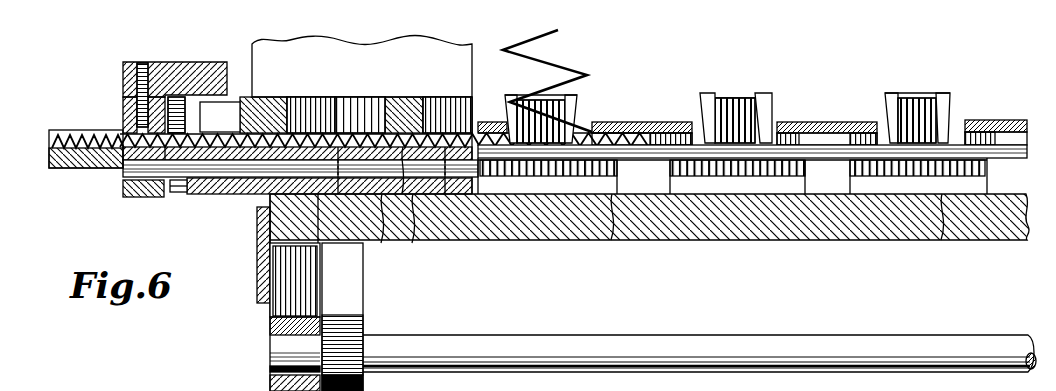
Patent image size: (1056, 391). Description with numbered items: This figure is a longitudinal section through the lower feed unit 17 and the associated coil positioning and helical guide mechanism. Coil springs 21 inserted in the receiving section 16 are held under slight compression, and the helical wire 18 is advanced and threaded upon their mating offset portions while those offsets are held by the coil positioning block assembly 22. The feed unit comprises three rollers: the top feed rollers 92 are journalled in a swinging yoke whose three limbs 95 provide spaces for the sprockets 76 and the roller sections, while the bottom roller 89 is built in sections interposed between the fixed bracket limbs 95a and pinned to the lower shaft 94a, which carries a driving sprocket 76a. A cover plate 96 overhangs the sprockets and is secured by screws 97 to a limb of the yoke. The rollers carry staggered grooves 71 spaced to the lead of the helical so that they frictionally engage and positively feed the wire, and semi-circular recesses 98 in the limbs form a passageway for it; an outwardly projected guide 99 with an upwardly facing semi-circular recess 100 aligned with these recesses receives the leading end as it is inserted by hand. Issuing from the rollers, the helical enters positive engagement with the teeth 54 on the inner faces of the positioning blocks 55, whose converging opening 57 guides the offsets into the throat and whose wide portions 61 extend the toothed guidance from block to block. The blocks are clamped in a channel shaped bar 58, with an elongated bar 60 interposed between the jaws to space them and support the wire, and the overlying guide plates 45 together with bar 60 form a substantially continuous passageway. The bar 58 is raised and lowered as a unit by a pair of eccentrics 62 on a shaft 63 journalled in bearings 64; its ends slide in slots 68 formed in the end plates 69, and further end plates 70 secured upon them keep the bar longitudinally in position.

The receiving section 16 is at (661, 386).
The lower feed unit 17 is at (306, 95).
The helical wire 18 is at (76, 131).
The coil springs 21 is at (548, 33).
The coil positioning block assembly 22 is at (731, 92).
The guide plates 45 is at (492, 121).
The teeth 54 is at (710, 100).
The positioning blocks 55 is at (767, 94).
The converging opening 57 is at (575, 95).
The channel shaped bar 58 is at (725, 222).
The elongated bar 60 is at (828, 160).
The wide portions 61 is at (590, 242).
The eccentrics 62 is at (363, 311).
The shaft 63 is at (660, 337).
The bearings 64 is at (270, 334).
The slots 68 is at (305, 278).
The end plates 69 is at (270, 311).
The end plates 70 is at (266, 244).
The staggered grooves 71 is at (376, 97).
The sprockets 76 is at (187, 117).
The driving sprocket 76a is at (178, 194).
The bottom roller 89 is at (381, 244).
The top feed rollers 92 is at (345, 97).
The lower shaft 94a is at (128, 172).
The limbs 95 is at (126, 108).
The limbs 95a is at (140, 197).
The cover plate 96 is at (185, 62).
The screws 97 is at (142, 63).
The semi-circular recesses 98 is at (413, 244).
The guide 99 is at (50, 131).
The semi-circular recess 100 is at (55, 148).